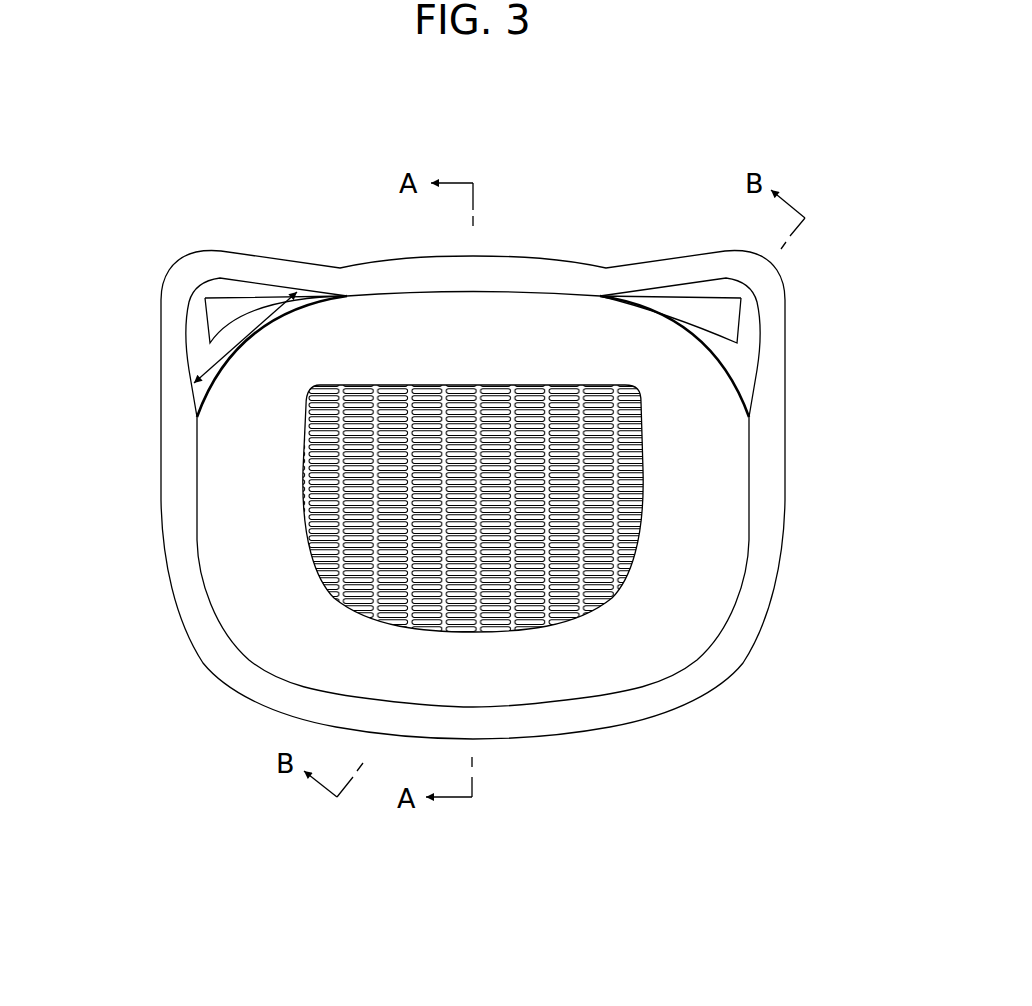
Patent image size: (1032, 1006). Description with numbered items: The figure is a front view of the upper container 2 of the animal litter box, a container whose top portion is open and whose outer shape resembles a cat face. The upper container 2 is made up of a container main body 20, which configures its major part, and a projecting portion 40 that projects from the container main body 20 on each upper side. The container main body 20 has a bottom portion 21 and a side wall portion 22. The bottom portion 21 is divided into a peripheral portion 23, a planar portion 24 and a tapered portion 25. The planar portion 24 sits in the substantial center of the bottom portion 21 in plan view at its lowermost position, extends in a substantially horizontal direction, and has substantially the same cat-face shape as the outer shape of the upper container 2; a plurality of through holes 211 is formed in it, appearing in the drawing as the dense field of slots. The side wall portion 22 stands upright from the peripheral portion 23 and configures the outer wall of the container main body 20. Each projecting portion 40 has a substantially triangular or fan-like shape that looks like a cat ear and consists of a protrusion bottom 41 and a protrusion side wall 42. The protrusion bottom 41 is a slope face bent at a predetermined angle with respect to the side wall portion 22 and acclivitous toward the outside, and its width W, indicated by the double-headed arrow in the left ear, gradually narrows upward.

The upper container 2 is at (627, 137).
The container main body 20 is at (794, 512).
The bottom portion 21 is at (247, 588).
The side wall portion 22 is at (157, 507).
The peripheral portion 23 is at (262, 658).
The planar portion 24 is at (508, 385).
The tapered portion 25 is at (620, 655).
The projecting portion 40 is at (727, 242).
The protrusion bottom 41 is at (713, 307).
The protrusion side wall 42 is at (757, 350).
The through holes 211 is at (418, 427).
The width of the protrusion bottom W is at (278, 314).